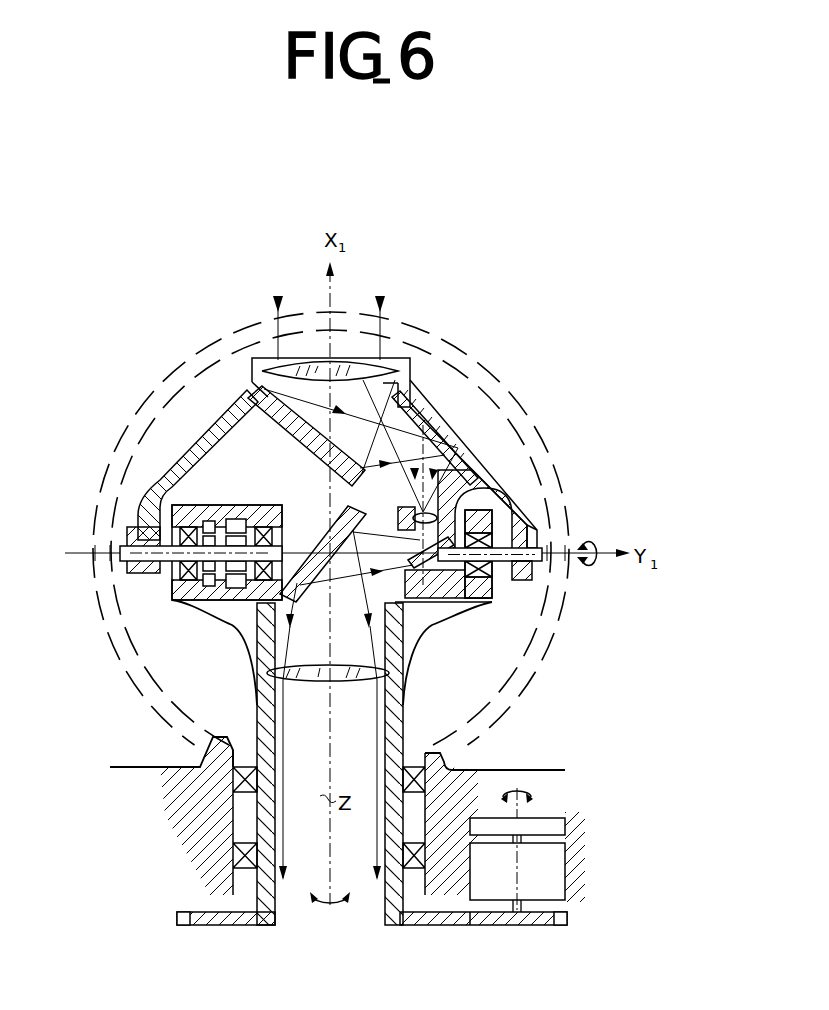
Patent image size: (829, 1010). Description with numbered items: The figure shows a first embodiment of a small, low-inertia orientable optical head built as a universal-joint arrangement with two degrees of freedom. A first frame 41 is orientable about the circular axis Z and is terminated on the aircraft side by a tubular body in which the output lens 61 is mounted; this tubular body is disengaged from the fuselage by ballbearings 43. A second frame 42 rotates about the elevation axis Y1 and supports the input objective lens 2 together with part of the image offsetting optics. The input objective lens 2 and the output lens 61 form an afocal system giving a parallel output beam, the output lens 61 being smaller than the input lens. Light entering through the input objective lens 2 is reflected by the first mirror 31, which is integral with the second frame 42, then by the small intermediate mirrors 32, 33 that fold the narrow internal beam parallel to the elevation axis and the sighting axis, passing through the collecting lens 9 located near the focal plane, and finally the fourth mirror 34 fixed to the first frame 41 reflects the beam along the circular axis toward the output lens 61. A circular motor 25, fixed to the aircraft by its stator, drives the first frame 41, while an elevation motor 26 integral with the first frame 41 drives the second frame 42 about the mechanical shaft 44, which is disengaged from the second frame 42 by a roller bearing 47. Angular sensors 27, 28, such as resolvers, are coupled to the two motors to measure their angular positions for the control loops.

The input objective lens 2 is at (336, 368).
The collecting lens 9 is at (416, 506).
The circular motor 25 is at (517, 850).
The elevation motor 26 is at (238, 519).
The angular sensor 27 is at (538, 824).
The angular sensor 28 is at (209, 521).
The first mirror 31 is at (318, 438).
The second mirror 32 is at (408, 418).
The third mirror 33 is at (408, 562).
The fourth mirror 34 is at (338, 522).
The first frame 41 is at (406, 744).
The second frame 42 is at (222, 428).
The ballbearings 43 is at (250, 766).
The mechanical shaft 44 is at (122, 560).
The roller bearing 47 is at (176, 584).
The output lens 61 is at (362, 668).